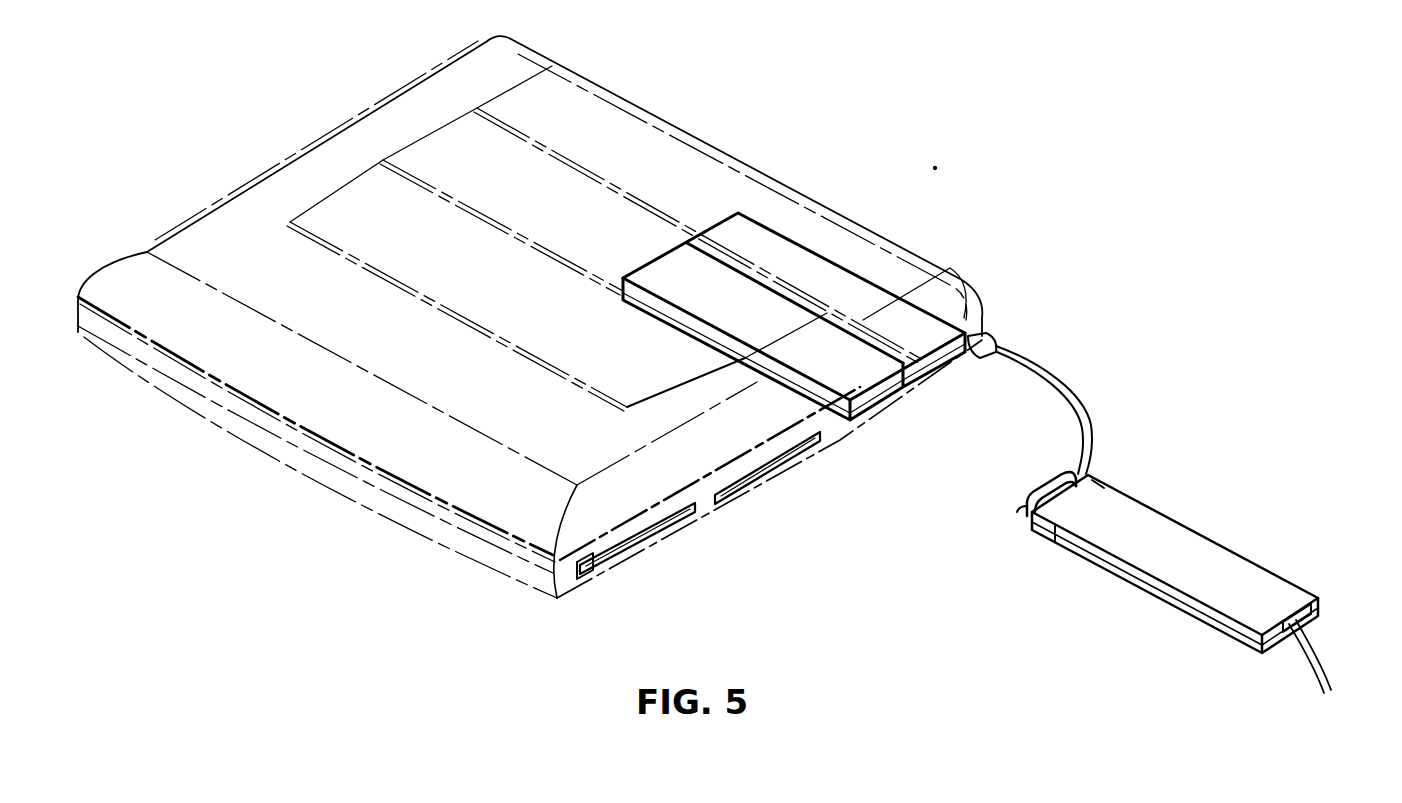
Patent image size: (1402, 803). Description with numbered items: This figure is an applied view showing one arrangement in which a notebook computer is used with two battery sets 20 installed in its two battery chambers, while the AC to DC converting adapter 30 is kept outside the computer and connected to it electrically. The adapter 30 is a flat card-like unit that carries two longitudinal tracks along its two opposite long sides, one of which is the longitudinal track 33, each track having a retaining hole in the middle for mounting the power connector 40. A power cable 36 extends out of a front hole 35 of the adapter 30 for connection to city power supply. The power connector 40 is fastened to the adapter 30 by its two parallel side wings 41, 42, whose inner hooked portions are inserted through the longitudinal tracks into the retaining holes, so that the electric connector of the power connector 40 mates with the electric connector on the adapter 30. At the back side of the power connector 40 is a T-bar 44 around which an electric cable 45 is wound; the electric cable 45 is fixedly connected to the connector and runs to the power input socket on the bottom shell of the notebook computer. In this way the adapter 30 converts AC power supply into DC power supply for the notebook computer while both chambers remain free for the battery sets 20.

The battery set 20 is at (865, 293).
The AC to DC converting adapter 30 is at (1190, 540).
The longitudinal track 33 is at (1140, 580).
The front hole 35 is at (1318, 620).
The power cable 36 is at (1306, 660).
The power connector 40 is at (1050, 483).
The side wing 41 is at (1102, 478).
The side wing 42 is at (1035, 532).
The T-bar 44 is at (1025, 506).
The electric cable 45 is at (1070, 398).